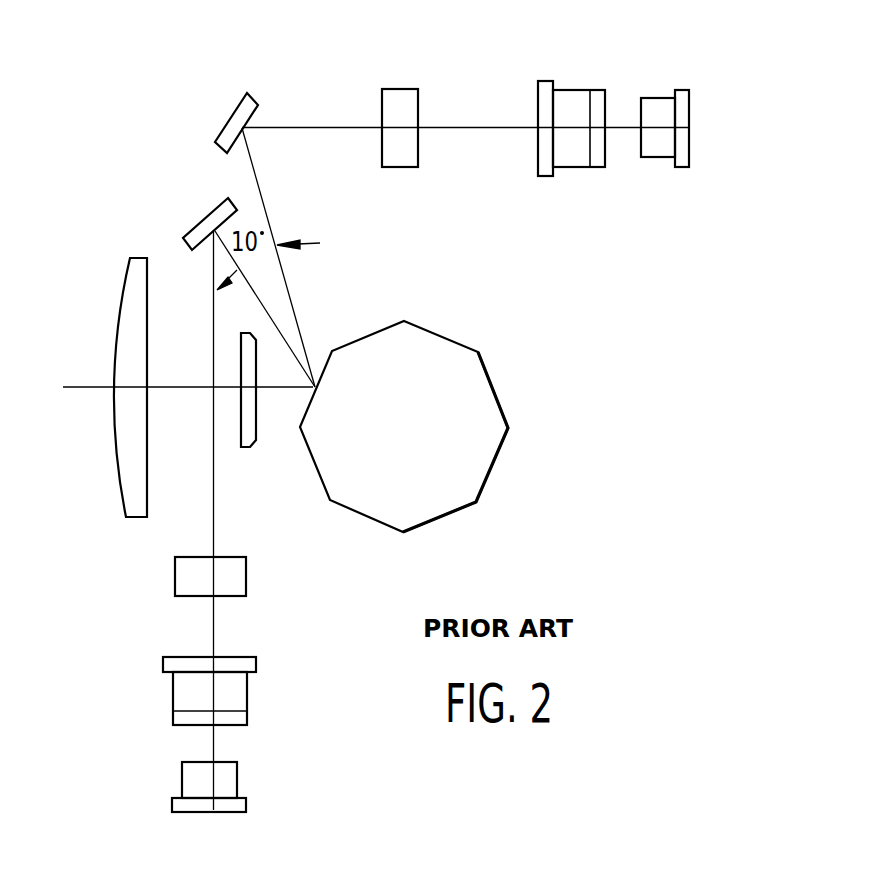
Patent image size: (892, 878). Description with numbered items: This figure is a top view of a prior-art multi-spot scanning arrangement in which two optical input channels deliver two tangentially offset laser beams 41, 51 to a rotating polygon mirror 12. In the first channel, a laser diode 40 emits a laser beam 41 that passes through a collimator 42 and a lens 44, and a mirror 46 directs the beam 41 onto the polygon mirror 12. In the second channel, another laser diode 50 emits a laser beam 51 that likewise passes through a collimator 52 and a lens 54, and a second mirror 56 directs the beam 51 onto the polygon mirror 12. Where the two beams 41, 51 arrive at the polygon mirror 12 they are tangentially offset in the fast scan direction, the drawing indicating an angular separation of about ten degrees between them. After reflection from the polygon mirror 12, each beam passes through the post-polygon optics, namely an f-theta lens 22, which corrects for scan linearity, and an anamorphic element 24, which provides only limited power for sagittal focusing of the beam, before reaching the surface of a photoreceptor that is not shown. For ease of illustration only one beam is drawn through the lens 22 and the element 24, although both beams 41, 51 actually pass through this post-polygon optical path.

The polygon mirror 12 is at (492, 380).
The f-theta lens 22 is at (241, 448).
The anamorphic element 24 is at (140, 517).
The laser diode 40 is at (245, 797).
The laser beam 41 is at (255, 298).
The collimator 42 is at (247, 695).
The lens 44 is at (248, 573).
The mirror 46 is at (210, 213).
The laser diode 50 is at (678, 90).
The laser beam 51 is at (290, 307).
The collimator 52 is at (578, 88).
The lens 54 is at (403, 88).
The mirror 56 is at (230, 115).